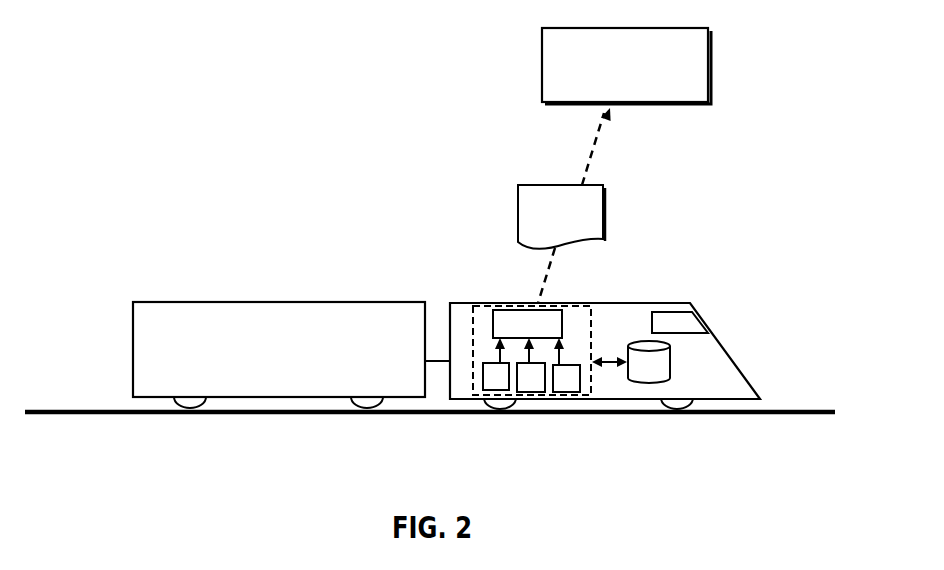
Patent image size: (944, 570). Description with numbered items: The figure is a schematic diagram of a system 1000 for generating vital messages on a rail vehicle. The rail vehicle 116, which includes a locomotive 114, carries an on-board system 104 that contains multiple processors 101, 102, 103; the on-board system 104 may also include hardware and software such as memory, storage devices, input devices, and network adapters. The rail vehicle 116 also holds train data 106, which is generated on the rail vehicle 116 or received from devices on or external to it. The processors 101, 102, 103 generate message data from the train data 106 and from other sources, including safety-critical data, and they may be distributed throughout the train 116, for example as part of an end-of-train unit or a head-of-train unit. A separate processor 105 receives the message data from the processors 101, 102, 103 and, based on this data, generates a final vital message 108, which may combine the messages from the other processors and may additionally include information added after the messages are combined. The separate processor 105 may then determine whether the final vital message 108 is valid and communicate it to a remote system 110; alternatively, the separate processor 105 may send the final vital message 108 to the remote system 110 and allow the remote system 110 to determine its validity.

The system for generating vital messages 1000 is at (160, 134).
The rail vehicle 116 is at (348, 264).
The locomotive 114 is at (747, 378).
The remote system 110 is at (626, 66).
The final vital message 108 is at (603, 200).
The on-board system 104 is at (473, 372).
The separate processor 105 is at (527, 324).
The train data 106 is at (649, 362).
The processor 101 is at (497, 392).
The processor 102 is at (532, 392).
The processor 103 is at (572, 392).